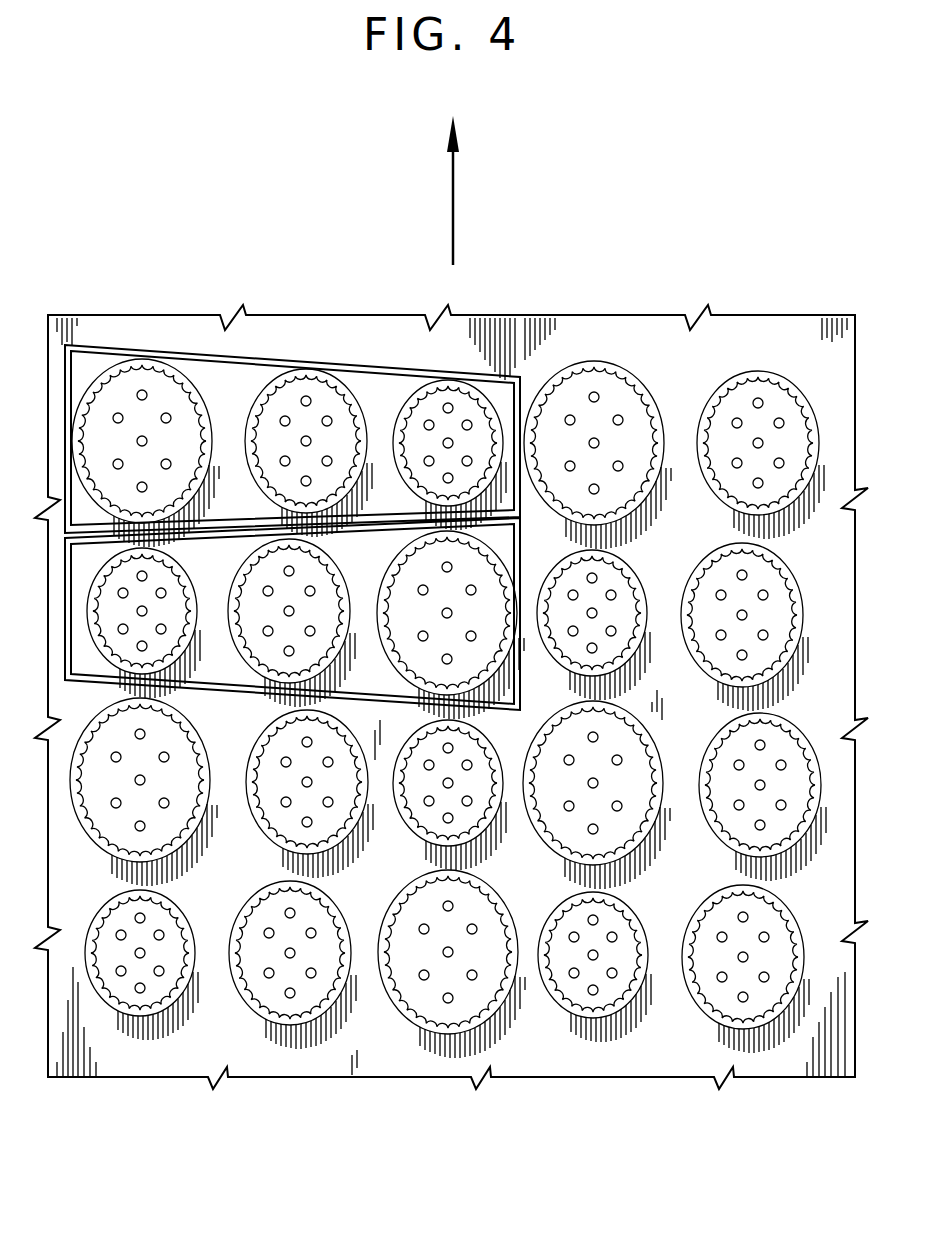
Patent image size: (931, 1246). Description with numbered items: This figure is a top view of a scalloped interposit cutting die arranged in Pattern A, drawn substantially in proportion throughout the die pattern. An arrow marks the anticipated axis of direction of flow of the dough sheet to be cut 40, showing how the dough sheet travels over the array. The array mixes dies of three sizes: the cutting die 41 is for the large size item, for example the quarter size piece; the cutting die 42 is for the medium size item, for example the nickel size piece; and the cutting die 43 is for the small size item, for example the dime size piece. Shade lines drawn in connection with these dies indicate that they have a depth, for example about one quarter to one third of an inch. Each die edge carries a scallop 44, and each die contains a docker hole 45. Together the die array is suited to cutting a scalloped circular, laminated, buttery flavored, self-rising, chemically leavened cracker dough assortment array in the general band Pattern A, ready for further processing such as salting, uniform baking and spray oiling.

The anticipated axis of direction of flow of the dough sheet to be cut 40 is at (455, 192).
The cutting die 41 is at (138, 362).
The cutting die 42 is at (287, 372).
The cutting die 43 is at (415, 393).
The scallop 44 is at (600, 378).
The docker hole 45 is at (757, 405).